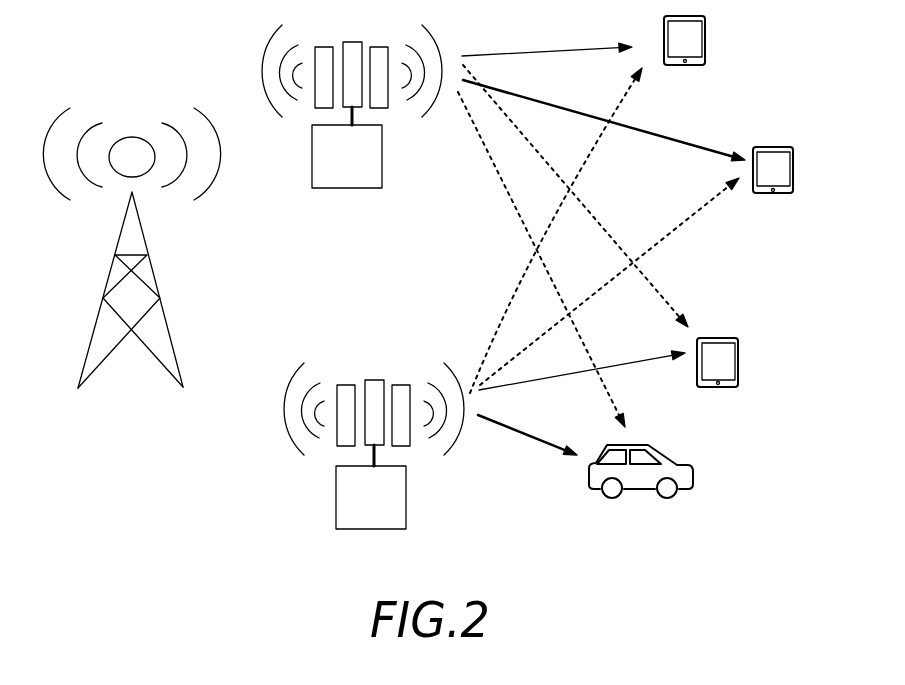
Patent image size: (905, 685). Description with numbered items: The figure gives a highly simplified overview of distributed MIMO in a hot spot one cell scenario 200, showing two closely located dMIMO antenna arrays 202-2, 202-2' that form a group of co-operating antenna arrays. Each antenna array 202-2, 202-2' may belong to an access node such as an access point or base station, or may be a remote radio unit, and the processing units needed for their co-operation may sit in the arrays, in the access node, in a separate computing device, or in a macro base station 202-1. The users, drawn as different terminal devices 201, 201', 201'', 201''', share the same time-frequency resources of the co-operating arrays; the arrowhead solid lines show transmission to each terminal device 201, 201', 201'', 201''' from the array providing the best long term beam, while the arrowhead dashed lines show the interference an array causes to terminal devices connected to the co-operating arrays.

The hot spot one cell scenario 200 is at (239, 551).
The macro base station 202-1 is at (102, 370).
The antenna array 202-2 is at (352, 94).
The antenna array 202-2' is at (374, 429).
The terminal device 201 is at (723, 397).
The terminal device 201' is at (785, 205).
The terminal device 201'' is at (697, 75).
The terminal device 201''' is at (664, 499).